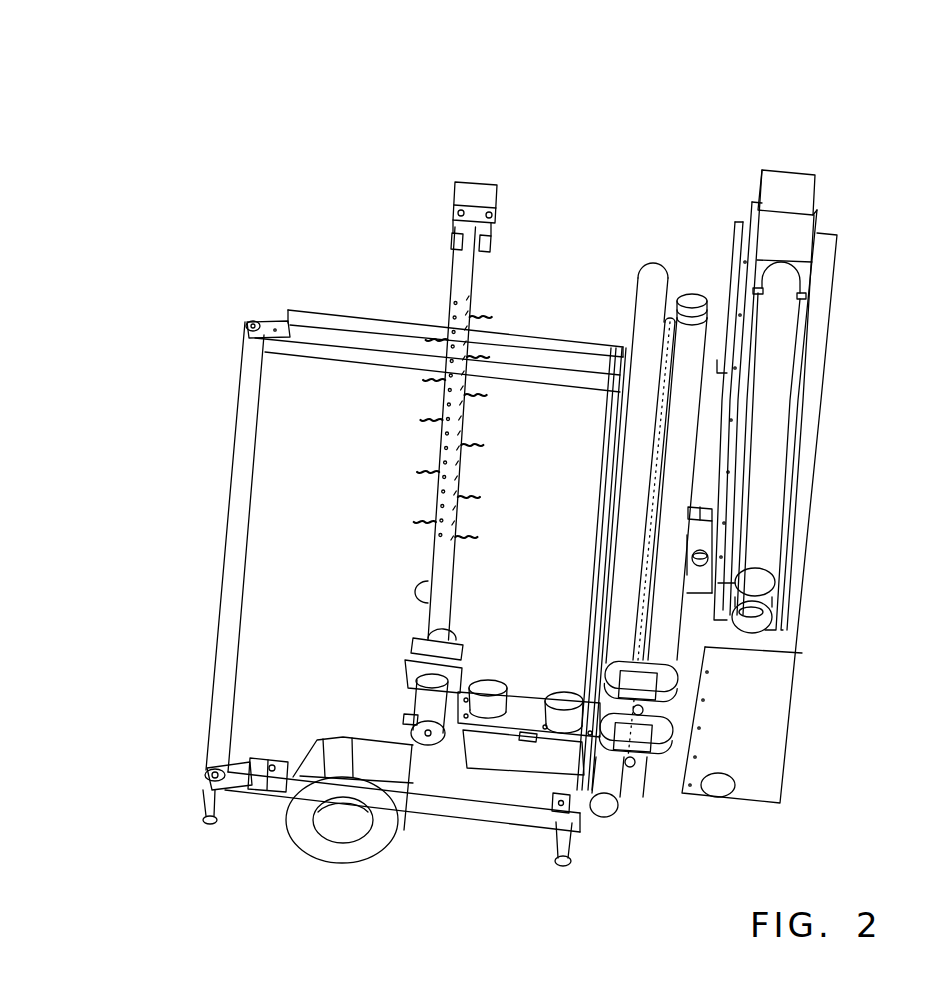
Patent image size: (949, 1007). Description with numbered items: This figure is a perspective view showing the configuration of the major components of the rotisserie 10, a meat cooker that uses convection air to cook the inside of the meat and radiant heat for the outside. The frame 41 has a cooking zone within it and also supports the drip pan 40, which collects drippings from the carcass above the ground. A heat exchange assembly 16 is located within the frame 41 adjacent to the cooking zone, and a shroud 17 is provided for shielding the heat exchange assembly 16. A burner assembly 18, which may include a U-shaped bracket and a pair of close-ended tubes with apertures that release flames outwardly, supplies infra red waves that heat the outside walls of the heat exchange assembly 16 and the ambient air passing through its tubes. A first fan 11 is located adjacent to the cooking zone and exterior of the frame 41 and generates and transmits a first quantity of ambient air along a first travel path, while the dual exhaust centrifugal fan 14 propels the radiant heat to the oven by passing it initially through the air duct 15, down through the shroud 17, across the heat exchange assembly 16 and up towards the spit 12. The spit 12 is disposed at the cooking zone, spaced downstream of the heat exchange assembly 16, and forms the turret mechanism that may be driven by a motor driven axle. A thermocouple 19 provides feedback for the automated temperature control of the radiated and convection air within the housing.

The rotisserie 10 is at (177, 203).
The first fan 11 is at (363, 852).
The spit 12 is at (468, 285).
The dual exhaust centrifugal fan 14 is at (552, 762).
The air duct 15 is at (775, 423).
The heat exchange assembly 16 is at (690, 278).
The shroud 17 is at (773, 738).
The burner assembly 18 is at (631, 768).
The thermocouple 19 is at (453, 204).
The drip pan 40 is at (360, 525).
The frame 41 is at (278, 311).